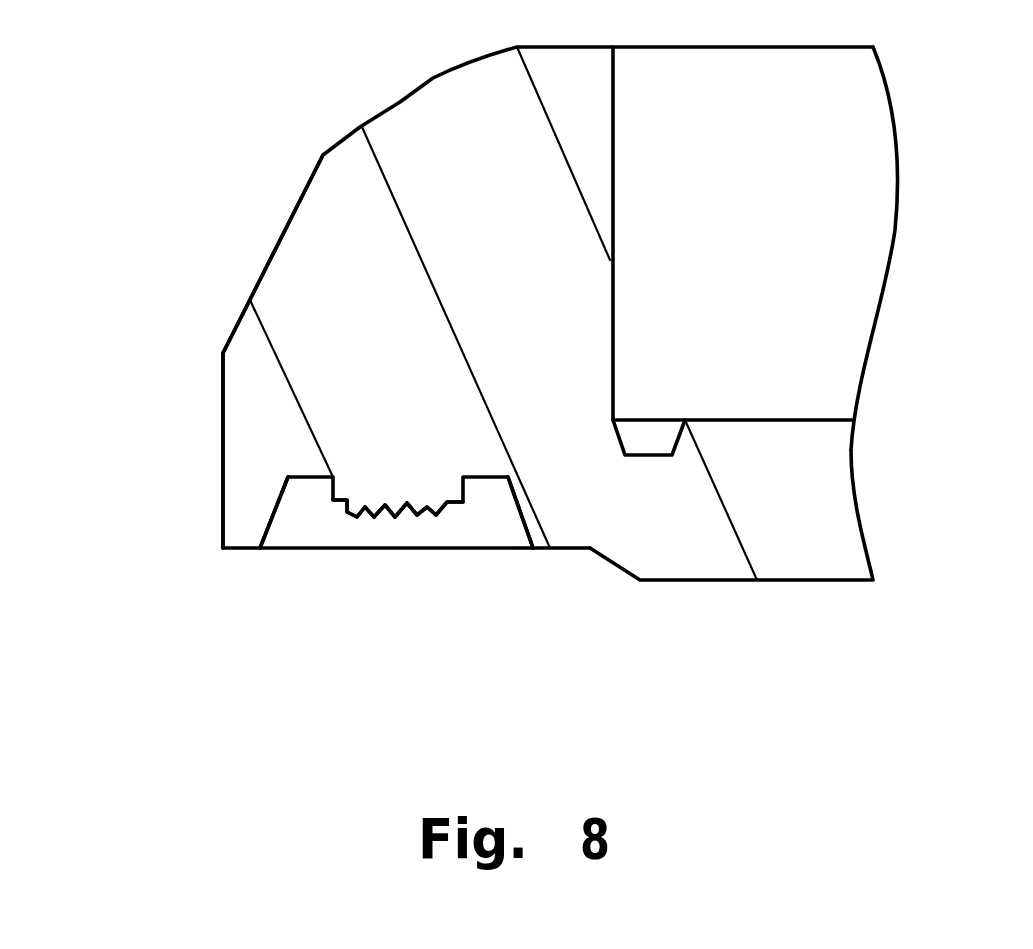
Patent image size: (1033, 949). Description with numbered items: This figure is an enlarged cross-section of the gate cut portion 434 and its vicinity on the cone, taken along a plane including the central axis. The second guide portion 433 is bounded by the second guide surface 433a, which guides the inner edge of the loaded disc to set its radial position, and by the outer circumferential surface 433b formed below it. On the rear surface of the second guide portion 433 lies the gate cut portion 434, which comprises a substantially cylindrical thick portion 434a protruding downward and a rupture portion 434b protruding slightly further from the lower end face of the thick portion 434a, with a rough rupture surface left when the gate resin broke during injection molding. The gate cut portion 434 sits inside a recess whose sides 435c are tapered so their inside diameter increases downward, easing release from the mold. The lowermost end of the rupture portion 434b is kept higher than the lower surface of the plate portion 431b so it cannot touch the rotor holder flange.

The second guide portion 433 is at (338, 191).
The second guide surface 433a is at (254, 264).
The outer circumferential surface 433b is at (211, 472).
The gate cut portion 434 is at (396, 570).
The thick portion 434a is at (382, 420).
The rupture portion 434b is at (427, 502).
The sides of the first groove portions 435c is at (283, 524).
The plate portion 431b is at (818, 560).